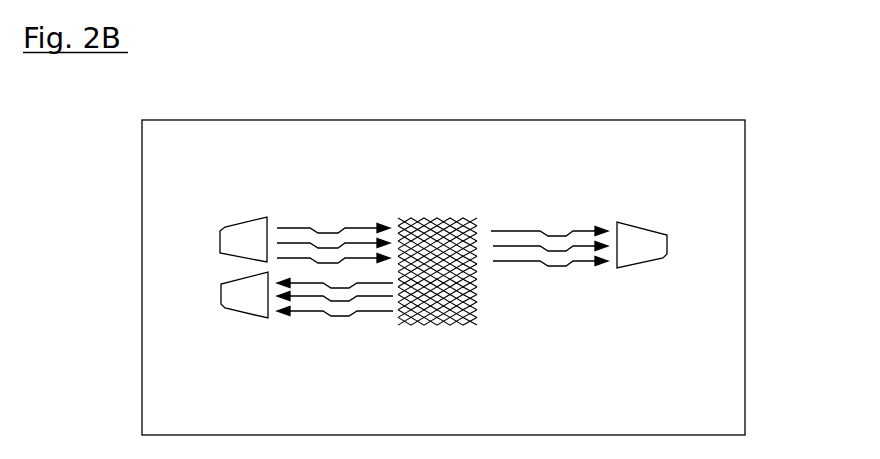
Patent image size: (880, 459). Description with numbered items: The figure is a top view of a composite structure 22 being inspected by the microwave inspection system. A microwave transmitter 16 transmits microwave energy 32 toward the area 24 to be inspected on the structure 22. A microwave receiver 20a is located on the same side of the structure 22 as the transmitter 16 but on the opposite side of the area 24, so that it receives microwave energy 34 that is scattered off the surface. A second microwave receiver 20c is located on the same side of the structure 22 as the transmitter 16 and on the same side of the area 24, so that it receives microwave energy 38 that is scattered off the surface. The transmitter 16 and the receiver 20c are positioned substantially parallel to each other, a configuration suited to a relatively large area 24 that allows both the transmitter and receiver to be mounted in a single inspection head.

The structure 22 is at (443, 261).
The microwave transmitter 16 is at (228, 224).
The microwave receiver 20a is at (662, 230).
The microwave receiver 20c is at (225, 311).
The area to be inspected 24 is at (448, 295).
The microwave energy 32 is at (333, 220).
The microwave energy 34 is at (549, 225).
The microwave energy 38 is at (335, 322).